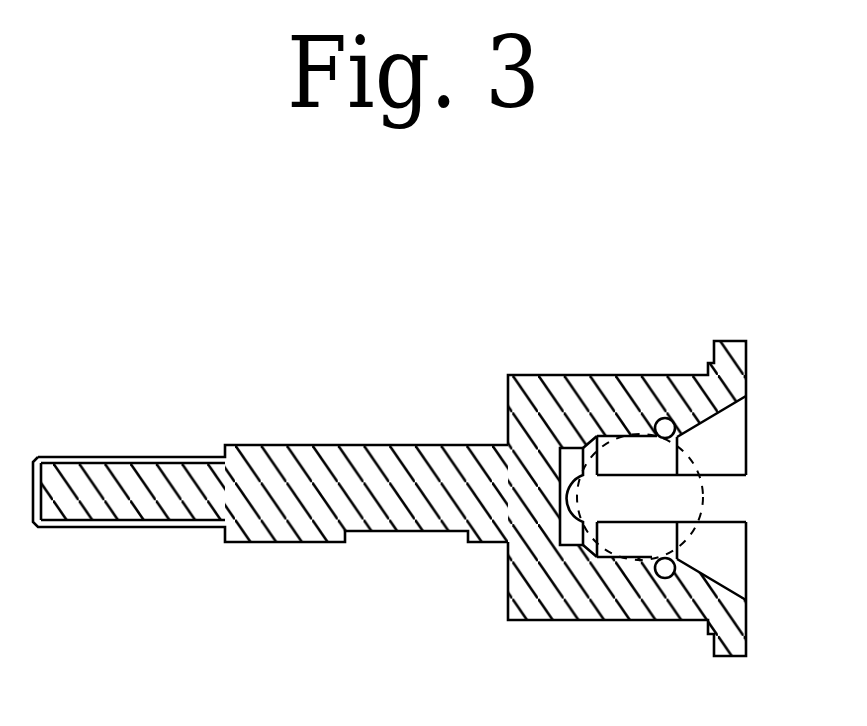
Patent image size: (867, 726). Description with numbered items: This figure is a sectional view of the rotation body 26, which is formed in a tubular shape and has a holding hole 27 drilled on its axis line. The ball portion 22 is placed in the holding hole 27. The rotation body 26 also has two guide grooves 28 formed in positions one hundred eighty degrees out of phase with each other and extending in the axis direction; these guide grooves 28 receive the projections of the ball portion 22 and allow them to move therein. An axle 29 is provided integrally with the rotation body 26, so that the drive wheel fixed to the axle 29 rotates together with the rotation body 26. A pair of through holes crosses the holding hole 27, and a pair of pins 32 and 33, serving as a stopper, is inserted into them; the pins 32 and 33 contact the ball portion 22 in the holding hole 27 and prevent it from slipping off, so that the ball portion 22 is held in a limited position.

The axle 29 is at (300, 478).
The rotation body 26 is at (497, 609).
The ball portion 22 is at (622, 455).
The holding hole 27 is at (622, 542).
The guide grooves 28 is at (724, 478).
The pin 32 is at (665, 418).
The pin 33 is at (667, 578).